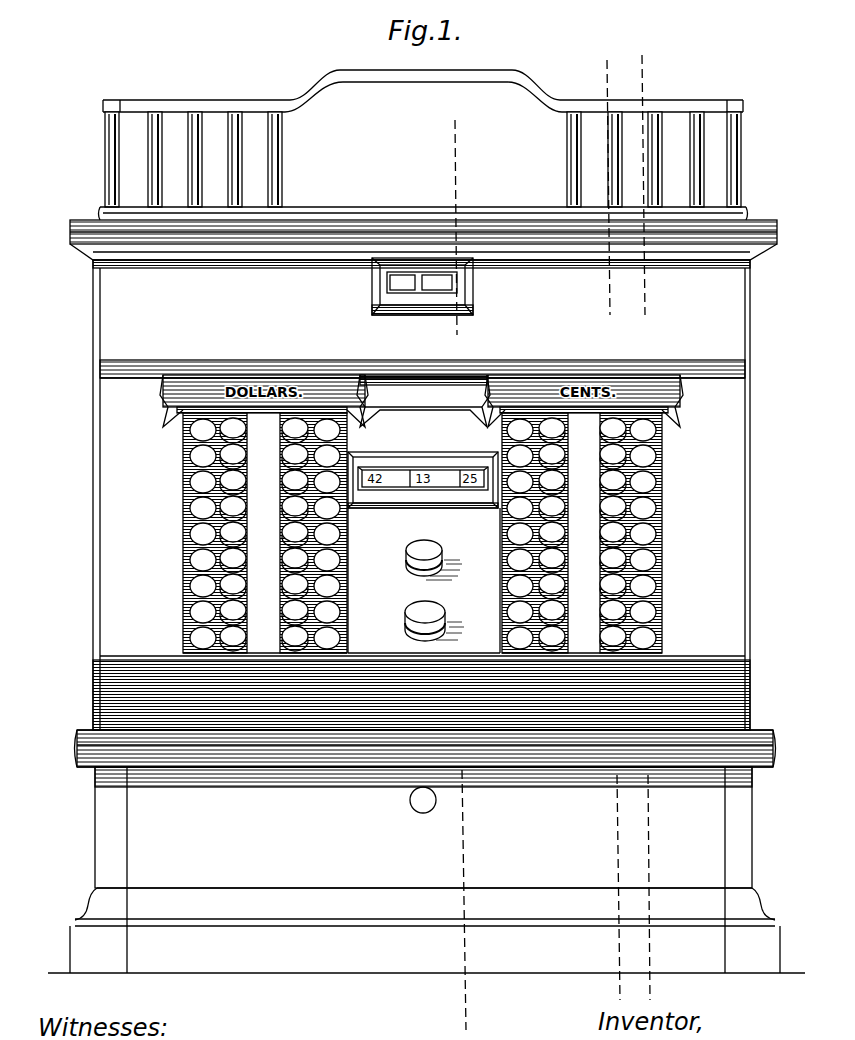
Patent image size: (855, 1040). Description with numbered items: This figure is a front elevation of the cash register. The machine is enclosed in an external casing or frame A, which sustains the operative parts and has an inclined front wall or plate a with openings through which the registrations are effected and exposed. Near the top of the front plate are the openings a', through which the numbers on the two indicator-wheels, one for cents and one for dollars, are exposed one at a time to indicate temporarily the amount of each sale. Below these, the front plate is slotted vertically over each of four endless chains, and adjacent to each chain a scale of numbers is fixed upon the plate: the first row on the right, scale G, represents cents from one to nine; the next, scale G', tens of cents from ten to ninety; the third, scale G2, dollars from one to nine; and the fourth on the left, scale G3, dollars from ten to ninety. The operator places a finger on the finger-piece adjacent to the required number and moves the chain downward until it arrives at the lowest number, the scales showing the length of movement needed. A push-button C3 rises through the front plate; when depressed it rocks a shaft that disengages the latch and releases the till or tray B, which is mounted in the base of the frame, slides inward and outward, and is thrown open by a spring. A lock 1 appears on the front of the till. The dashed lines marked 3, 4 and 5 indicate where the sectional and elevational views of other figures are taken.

The inclined front wall or plate a is at (408, 495).
The openings in the front plate a' is at (404, 286).
The external casing or frame A is at (108, 796).
The till or tray B is at (426, 870).
The drawer lock 1 is at (423, 800).
The section line 3 3 is at (663, 63).
The section line 4 4 is at (633, 67).
The section line 5 5 is at (493, 121).
The scale of numbers G is at (646, 533).
The scale of numbers G' is at (521, 533).
The scale of numbers G2 is at (347, 616).
The scale of numbers G3 is at (188, 600).
The push-button C3 is at (418, 617).